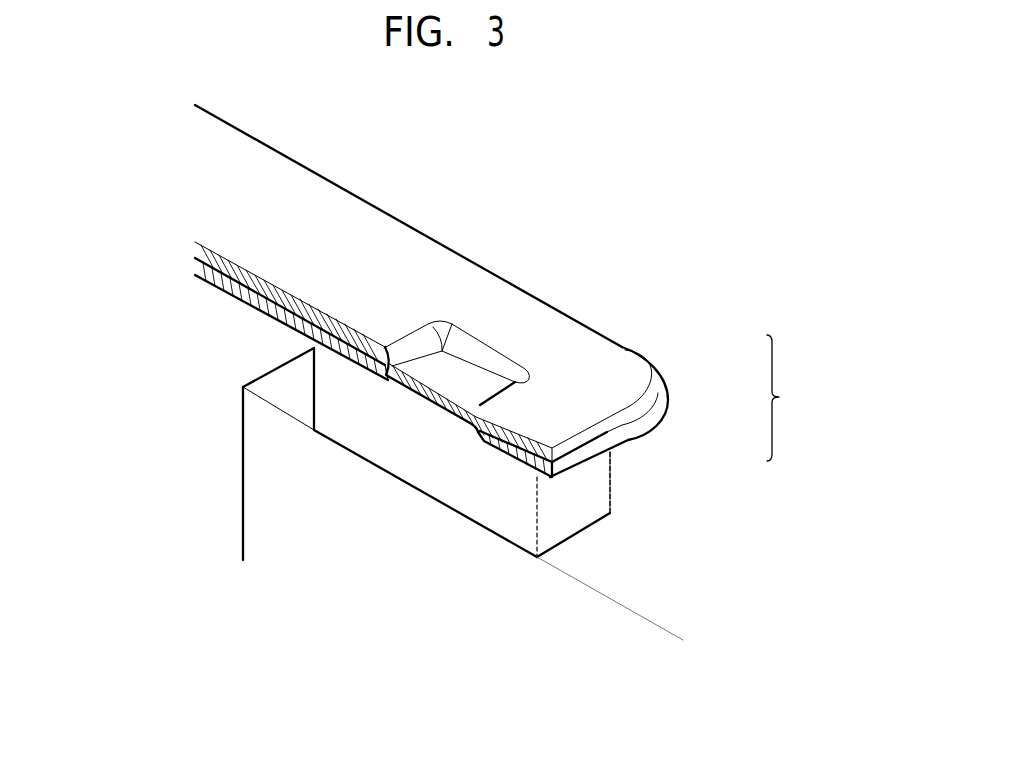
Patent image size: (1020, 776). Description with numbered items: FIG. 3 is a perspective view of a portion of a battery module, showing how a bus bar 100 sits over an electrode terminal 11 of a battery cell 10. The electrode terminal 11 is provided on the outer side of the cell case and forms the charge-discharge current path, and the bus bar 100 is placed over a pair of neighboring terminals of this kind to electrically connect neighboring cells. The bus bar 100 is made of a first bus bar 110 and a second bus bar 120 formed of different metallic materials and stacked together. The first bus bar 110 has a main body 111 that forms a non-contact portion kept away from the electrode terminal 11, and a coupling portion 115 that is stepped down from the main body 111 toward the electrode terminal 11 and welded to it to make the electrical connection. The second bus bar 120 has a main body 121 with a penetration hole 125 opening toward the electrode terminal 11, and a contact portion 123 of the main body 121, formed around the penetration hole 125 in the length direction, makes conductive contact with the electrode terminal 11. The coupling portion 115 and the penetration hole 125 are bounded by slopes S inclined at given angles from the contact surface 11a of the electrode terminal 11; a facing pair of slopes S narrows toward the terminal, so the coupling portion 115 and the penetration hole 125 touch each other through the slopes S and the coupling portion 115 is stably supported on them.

The battery cell 10 is at (557, 641).
The electrode terminal 11 is at (423, 465).
The contact surface 11a is at (508, 455).
The bus bar 100 is at (794, 398).
The first bus bar 110 is at (635, 377).
The main body 111 is at (380, 233).
The coupling portion 115 is at (453, 380).
The second bus bar 120 is at (589, 452).
The main body 121 is at (560, 479).
The contact portion 123 is at (343, 352).
The penetration hole 125 is at (512, 432).
The slope S is at (385, 373).